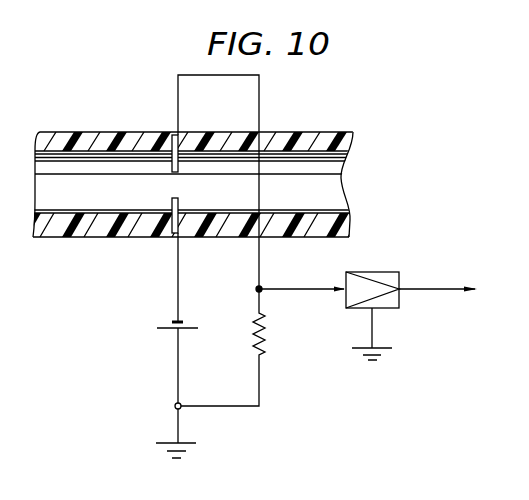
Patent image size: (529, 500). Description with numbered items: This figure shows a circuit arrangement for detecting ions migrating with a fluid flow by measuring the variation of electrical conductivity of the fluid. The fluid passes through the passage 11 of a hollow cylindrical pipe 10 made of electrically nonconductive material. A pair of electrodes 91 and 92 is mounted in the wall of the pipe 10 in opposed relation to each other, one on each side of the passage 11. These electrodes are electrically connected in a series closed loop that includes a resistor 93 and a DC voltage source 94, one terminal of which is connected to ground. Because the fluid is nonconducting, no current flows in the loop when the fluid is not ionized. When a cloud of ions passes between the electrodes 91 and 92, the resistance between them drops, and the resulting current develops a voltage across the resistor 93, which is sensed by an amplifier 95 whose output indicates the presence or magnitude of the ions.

The pipe 10 is at (63, 137).
The passage 11 is at (94, 192).
The electrode 91 is at (200, 152).
The electrode 92 is at (170, 208).
The resistor 93 is at (262, 356).
The DC voltage source 94 is at (160, 330).
The amplifier 95 is at (383, 276).